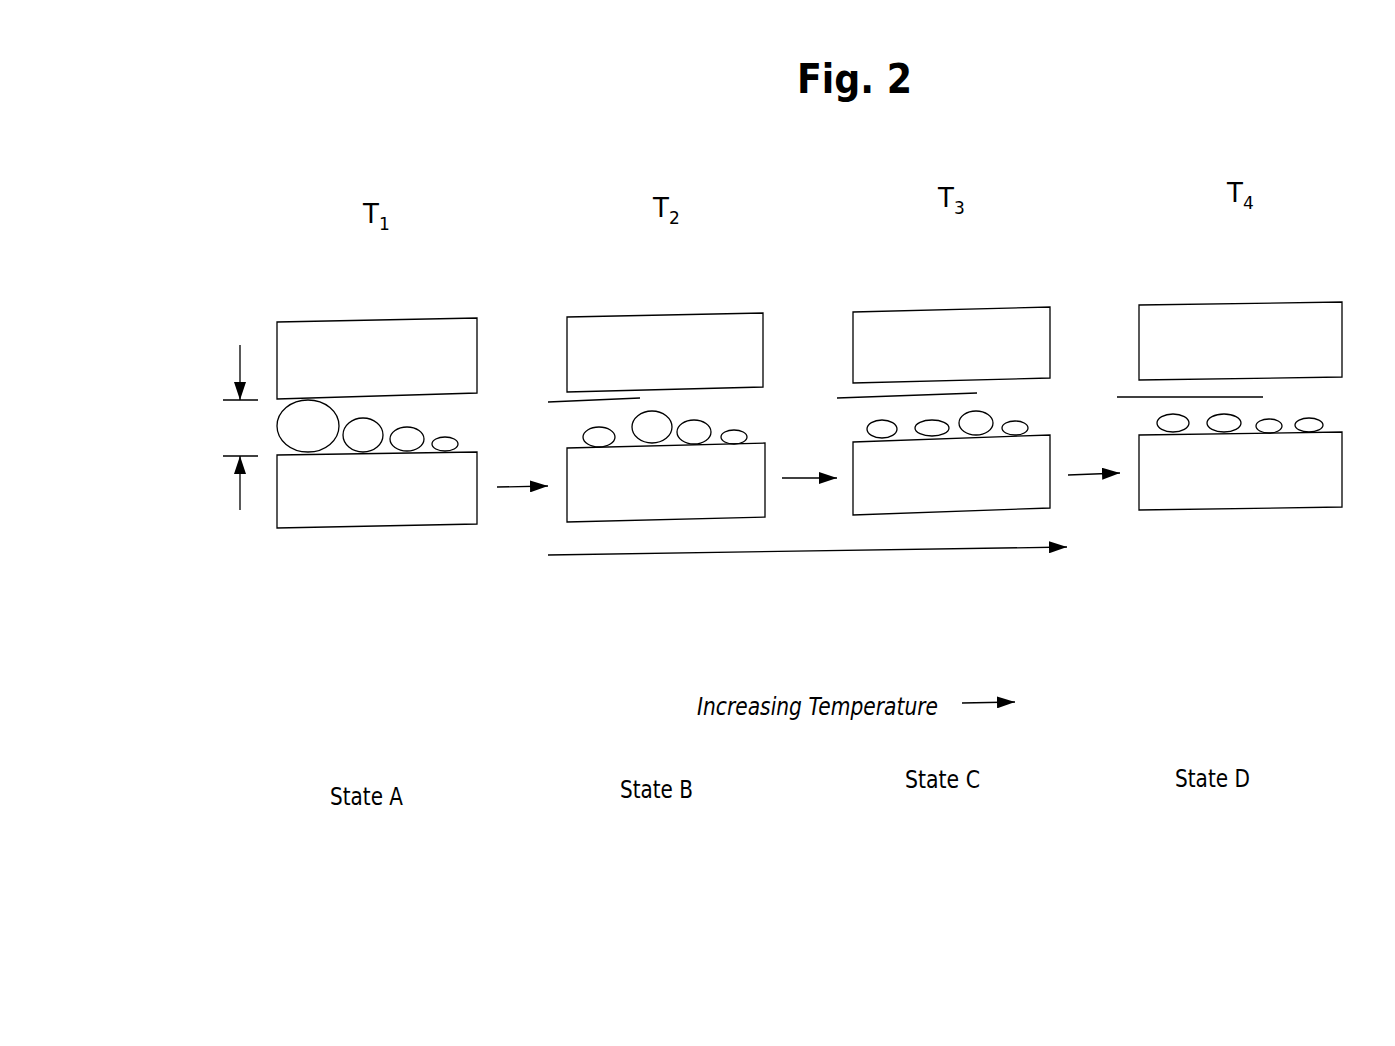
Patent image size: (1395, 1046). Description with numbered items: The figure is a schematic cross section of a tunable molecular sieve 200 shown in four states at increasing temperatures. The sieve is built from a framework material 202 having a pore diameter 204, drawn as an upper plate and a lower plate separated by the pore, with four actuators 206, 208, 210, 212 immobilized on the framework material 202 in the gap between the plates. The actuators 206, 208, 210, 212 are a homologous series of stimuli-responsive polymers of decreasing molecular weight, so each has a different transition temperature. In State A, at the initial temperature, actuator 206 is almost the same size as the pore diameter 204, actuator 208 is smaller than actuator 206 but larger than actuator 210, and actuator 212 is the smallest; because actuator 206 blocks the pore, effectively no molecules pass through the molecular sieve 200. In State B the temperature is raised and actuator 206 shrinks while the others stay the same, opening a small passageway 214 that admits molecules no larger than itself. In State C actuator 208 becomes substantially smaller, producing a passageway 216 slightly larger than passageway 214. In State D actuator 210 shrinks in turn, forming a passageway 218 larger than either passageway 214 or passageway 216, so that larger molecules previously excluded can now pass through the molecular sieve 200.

The tunable molecular sieve 200 is at (328, 297).
The framework material 202 is at (367, 360).
The pore diameter 204 is at (220, 447).
The actuator 206 is at (310, 437).
The actuator 208 is at (363, 440).
The actuator 210 is at (407, 440).
The actuator 212 is at (447, 447).
The passageway 214 is at (570, 405).
The passageway 216 is at (882, 400).
The passageway 218 is at (1165, 400).